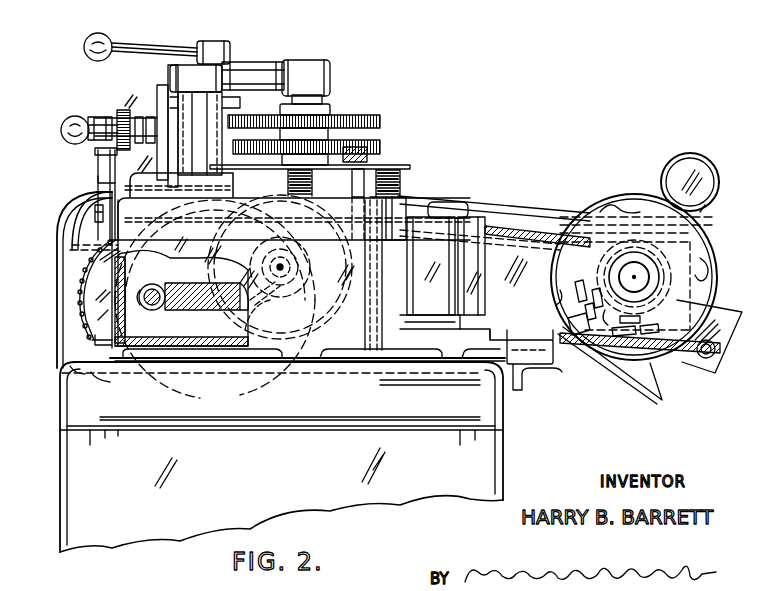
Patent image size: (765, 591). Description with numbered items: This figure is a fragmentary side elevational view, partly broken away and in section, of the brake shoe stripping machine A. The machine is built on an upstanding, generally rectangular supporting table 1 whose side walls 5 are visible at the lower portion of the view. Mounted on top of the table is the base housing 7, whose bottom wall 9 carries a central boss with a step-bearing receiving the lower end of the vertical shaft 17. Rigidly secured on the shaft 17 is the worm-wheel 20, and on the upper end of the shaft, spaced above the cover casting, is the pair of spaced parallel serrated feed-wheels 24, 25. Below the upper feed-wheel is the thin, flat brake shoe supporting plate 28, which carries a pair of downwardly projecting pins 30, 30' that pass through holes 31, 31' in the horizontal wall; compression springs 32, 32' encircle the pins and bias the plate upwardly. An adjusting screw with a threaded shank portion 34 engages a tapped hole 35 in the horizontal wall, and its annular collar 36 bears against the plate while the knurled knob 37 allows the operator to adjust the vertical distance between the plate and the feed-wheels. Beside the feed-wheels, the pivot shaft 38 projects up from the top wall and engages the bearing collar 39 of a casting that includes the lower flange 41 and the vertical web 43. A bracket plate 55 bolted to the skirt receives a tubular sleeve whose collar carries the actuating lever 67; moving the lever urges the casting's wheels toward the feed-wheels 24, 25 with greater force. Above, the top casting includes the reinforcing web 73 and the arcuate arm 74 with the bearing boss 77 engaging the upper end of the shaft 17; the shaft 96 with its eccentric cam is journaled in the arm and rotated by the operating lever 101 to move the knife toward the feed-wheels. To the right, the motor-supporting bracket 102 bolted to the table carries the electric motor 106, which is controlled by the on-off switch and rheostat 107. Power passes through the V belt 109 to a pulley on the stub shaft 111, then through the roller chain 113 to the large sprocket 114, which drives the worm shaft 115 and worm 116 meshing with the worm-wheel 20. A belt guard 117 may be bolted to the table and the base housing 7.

The supporting table 1 is at (58, 494).
The side walls 5 is at (62, 446).
The base housing 7 is at (114, 284).
The bottom wall 9 is at (232, 356).
The vertical shaft 17 is at (325, 98).
The worm-wheel 20 is at (200, 288).
The feed-wheel 24 is at (346, 118).
The feed-wheel 25 is at (340, 137).
The brake shoe supporting plate 28 is at (405, 165).
The pin 30 is at (297, 267).
The pin 30' is at (377, 234).
The hole 31 is at (215, 299).
The hole 31' is at (405, 258).
The compression spring 32 is at (282, 183).
The compression spring 32' is at (416, 192).
The threaded shank portion 34 is at (352, 181).
The tapped hole 35 is at (280, 267).
The annular collar 36 is at (378, 163).
The knurled knob 37 is at (372, 140).
The pivot shaft 38 is at (207, 100).
The bearing collar 39 is at (218, 76).
The lower flange 41 is at (176, 186).
The vertical web 43 is at (152, 92).
The bracket plate 55 is at (100, 160).
The actuating lever 67 is at (96, 116).
The reinforcing web 73 is at (163, 100).
The arcuate arm 74 is at (255, 68).
The bearing boss 77 is at (329, 68).
The shaft 96 is at (213, 40).
The operating lever 101 is at (158, 44).
The motor-supporting bracket 102 is at (538, 375).
The electric motor 106 is at (632, 200).
The on-off switch and rheostat 107 is at (481, 230).
The V belt 109 is at (540, 240).
The stub shaft 111 is at (288, 290).
The roller chain 113 is at (268, 308).
The large sprocket 114 is at (75, 316).
The worm shaft 115 is at (156, 286).
The worm 116 is at (156, 310).
The belt guard 117 is at (56, 240).
The brake shoe stripping machine A is at (478, 192).